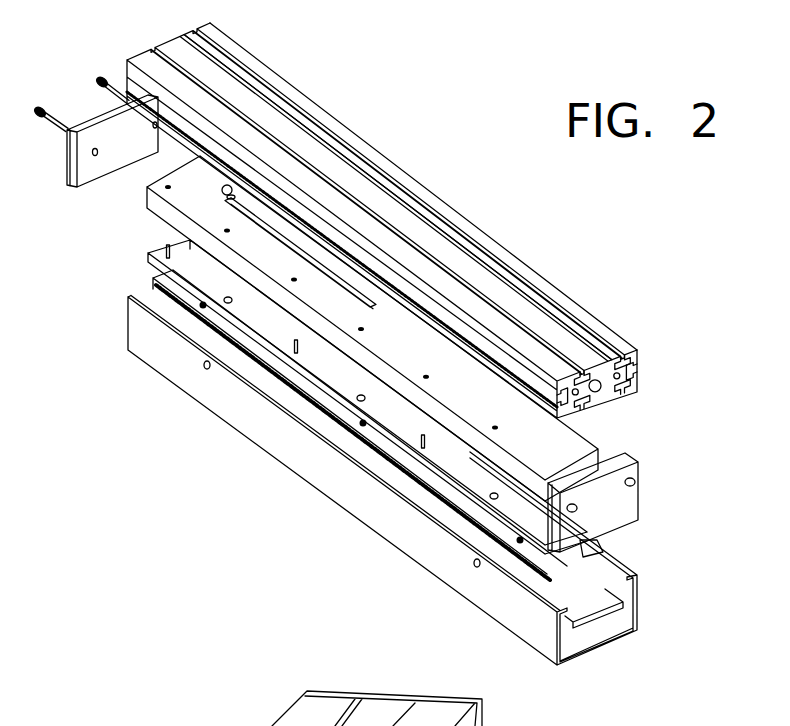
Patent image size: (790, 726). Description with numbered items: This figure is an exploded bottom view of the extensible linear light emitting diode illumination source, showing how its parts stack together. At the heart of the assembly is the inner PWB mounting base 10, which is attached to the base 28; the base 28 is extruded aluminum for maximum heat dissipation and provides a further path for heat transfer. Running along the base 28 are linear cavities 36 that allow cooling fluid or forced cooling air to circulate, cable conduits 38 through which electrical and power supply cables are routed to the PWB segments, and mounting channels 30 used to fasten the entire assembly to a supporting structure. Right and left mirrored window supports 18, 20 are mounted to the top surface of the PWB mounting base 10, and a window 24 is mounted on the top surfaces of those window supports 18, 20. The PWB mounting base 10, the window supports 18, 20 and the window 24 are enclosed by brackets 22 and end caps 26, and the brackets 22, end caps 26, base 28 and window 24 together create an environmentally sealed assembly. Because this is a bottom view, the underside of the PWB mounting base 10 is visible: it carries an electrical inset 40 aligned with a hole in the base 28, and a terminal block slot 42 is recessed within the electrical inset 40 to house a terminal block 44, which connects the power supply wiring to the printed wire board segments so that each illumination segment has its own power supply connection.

The inner PWB mounting base 10 is at (605, 443).
The right mirrored window support 18 is at (612, 552).
The left mirrored window support 20 is at (407, 468).
The brackets 22 is at (277, 447).
The window 24 is at (590, 625).
The end caps 26 is at (67, 153).
The base 28 is at (343, 124).
The mounting channels 30 is at (397, 193).
The linear cavities 36 is at (627, 362).
The cable conduits 38 is at (598, 392).
The electrical inset 40 is at (372, 305).
The terminal block slot 42 is at (240, 202).
The terminal block 44 is at (228, 185).